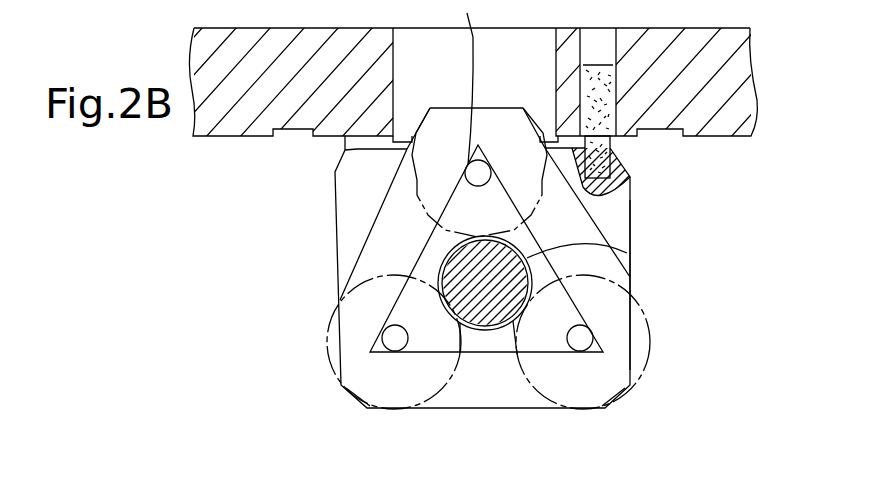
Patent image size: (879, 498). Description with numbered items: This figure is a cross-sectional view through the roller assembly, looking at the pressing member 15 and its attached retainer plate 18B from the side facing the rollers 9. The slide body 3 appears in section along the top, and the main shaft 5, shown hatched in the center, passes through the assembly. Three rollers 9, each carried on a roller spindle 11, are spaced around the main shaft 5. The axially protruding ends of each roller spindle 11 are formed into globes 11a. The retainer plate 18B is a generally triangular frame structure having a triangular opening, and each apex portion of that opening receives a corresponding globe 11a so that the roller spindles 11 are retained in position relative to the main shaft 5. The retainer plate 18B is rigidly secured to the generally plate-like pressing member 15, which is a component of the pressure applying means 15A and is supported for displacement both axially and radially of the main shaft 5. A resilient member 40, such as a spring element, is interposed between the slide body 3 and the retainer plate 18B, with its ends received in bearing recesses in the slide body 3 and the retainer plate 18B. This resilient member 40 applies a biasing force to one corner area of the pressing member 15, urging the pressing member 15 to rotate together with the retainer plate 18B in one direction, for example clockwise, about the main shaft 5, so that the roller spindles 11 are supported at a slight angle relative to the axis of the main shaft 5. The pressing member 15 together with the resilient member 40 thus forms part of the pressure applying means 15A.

The slide body 3 is at (211, 52).
The main shaft 5 is at (625, 253).
The roller 9 is at (560, 398).
The roller spindle 11 is at (387, 340).
The globe 11a is at (590, 340).
The pressing member 15 is at (630, 247).
The pressure applying means 15A is at (644, 270).
The retainer plate 18B is at (377, 233).
The resilient member 40 is at (607, 153).